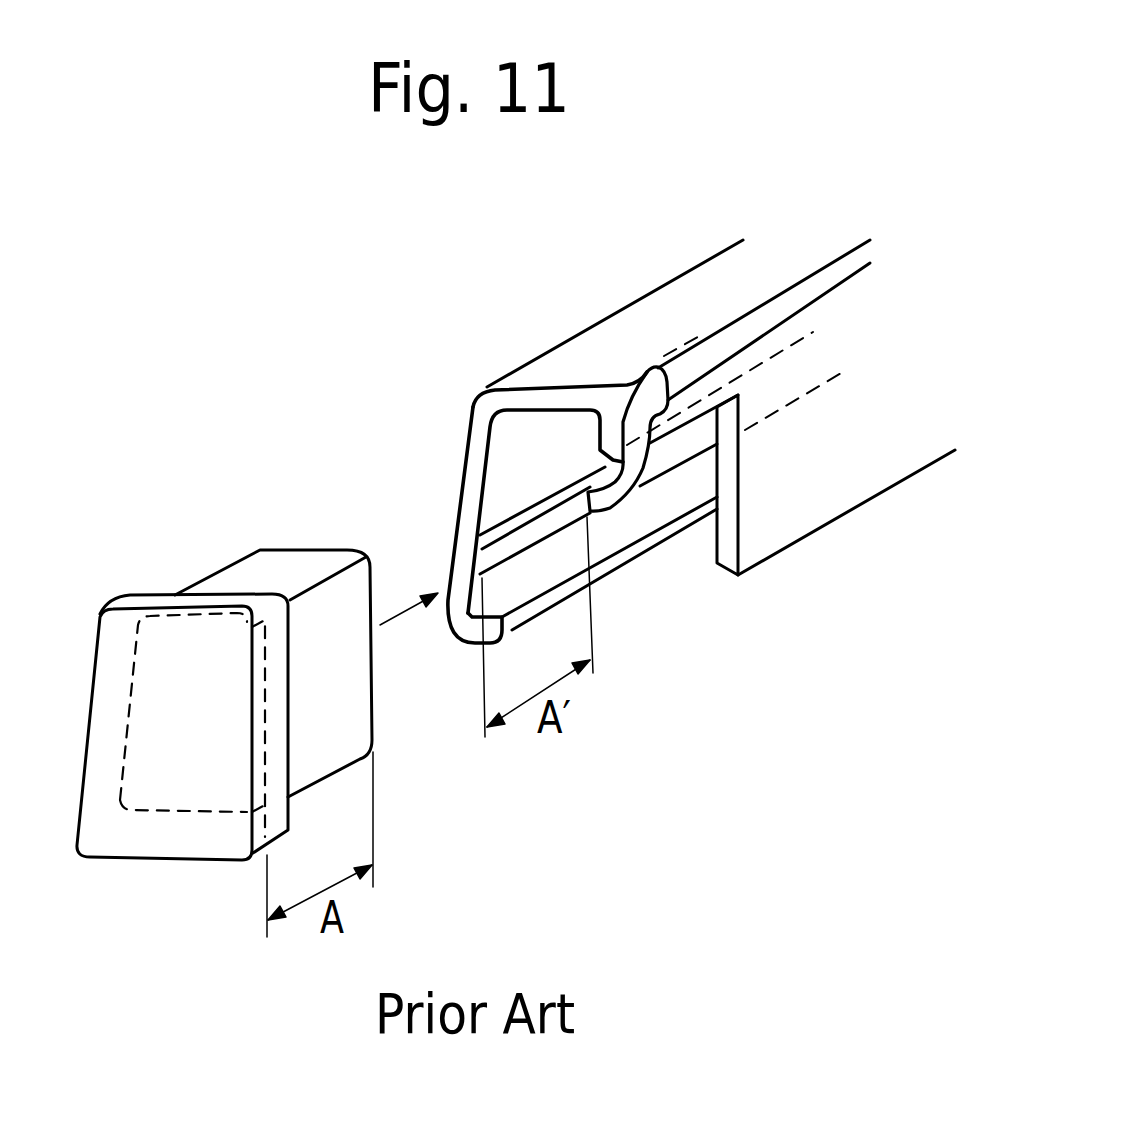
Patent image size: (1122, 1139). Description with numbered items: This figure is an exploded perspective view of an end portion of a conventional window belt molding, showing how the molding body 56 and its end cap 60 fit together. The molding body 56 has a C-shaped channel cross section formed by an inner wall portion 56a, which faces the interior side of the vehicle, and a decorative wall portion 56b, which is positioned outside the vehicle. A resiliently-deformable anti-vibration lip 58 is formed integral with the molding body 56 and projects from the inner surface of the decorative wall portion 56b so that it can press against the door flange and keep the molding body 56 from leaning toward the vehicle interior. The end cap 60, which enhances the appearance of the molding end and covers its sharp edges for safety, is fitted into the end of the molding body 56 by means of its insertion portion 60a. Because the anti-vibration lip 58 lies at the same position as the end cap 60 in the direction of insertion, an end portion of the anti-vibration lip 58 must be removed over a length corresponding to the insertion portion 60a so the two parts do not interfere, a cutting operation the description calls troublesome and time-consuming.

The molding body 56 is at (492, 385).
The inner wall portion 56a is at (663, 407).
The decorative wall portion 56b is at (462, 488).
The anti-vibration lip 58 is at (667, 457).
The end cap 60 is at (172, 595).
The insertion portion 60a is at (277, 568).